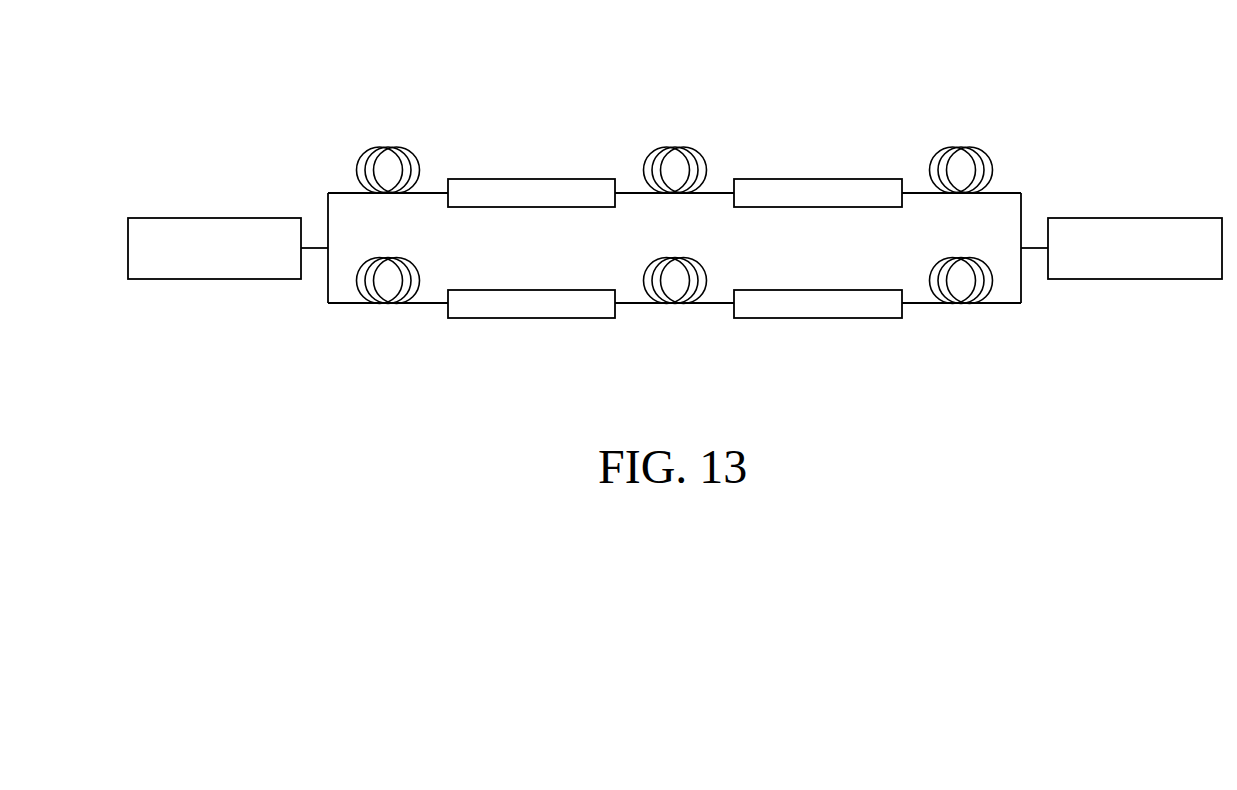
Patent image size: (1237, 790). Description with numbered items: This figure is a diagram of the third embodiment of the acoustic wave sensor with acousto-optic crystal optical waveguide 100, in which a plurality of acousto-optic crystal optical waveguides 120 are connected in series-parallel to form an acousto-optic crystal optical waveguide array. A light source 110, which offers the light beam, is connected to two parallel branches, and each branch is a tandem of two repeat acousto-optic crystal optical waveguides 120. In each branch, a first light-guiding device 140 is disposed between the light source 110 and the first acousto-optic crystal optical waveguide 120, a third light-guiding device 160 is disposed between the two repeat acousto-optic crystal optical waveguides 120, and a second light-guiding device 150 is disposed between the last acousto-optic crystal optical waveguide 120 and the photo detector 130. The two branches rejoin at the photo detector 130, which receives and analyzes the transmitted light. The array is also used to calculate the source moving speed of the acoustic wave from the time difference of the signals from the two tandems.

The acoustic wave sensor with acousto-optic crystal optical waveguide 100 is at (166, 102).
The light source 110 is at (236, 218).
The acousto-optic crystal optical waveguide 120 is at (478, 179).
The photo detector 130 is at (1145, 218).
The first light-guiding device 140 is at (382, 147).
The second light-guiding device 150 is at (958, 147).
The third light-guiding device 160 is at (672, 147).